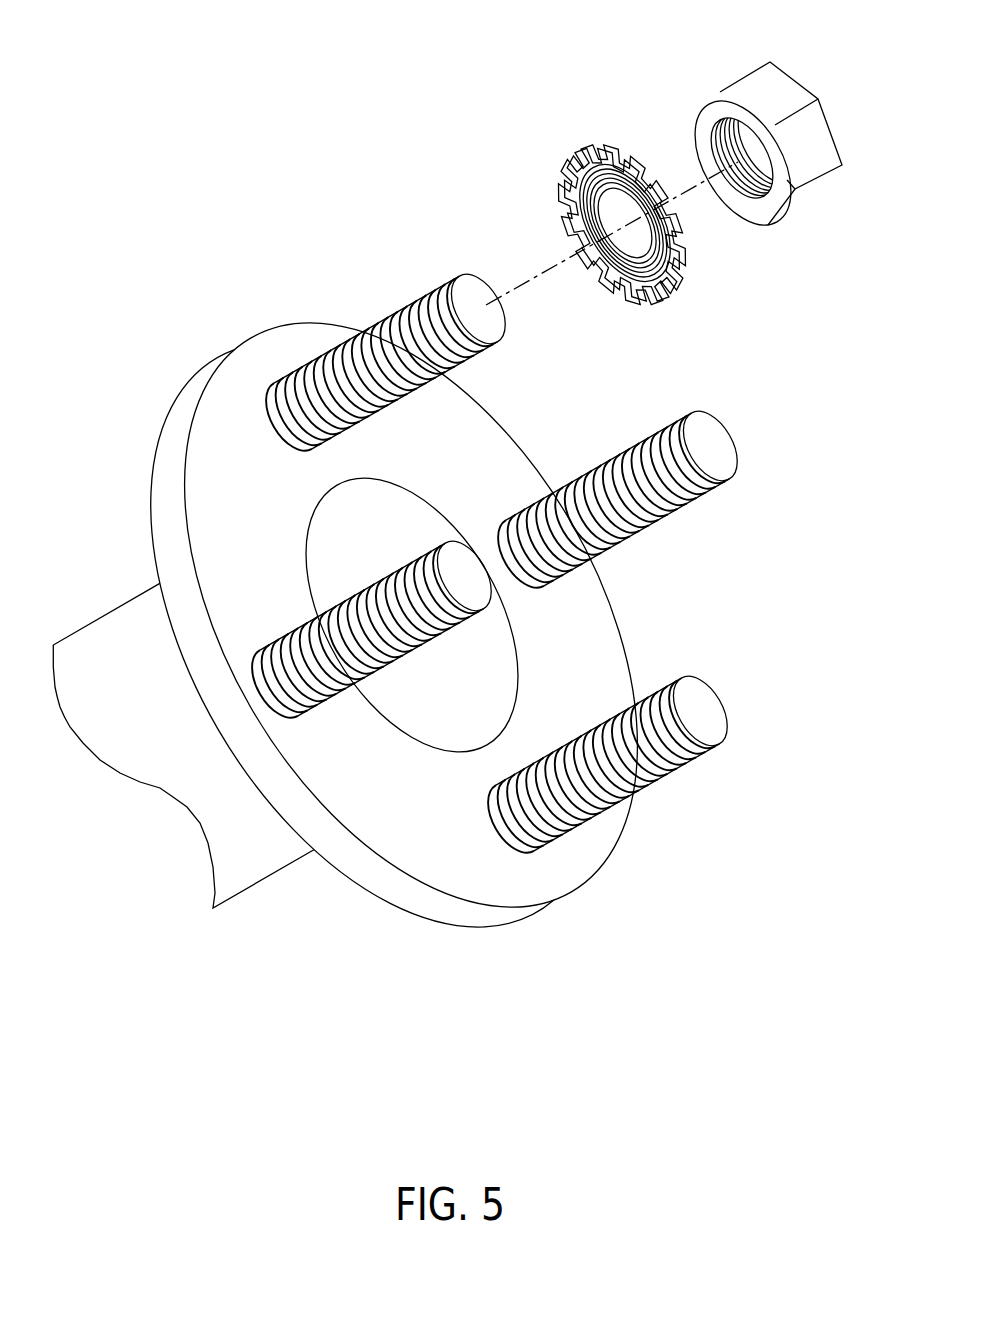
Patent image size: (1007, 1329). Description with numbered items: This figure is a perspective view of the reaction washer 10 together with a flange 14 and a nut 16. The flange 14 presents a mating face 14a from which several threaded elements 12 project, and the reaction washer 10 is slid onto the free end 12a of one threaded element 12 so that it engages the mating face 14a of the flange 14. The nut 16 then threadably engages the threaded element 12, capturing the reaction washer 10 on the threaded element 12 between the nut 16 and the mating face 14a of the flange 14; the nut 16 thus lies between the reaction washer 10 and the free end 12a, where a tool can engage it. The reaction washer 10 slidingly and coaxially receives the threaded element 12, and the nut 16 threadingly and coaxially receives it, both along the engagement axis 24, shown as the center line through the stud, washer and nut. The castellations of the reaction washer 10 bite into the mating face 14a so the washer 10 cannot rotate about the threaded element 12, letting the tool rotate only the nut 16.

The reaction washer 10 is at (622, 74).
The threaded element 12 is at (387, 310).
The free end 12a is at (472, 293).
The flange 14 is at (392, 974).
The mating face 14a is at (238, 398).
The nut 16 is at (771, 82).
The engagement axis 24 is at (552, 268).